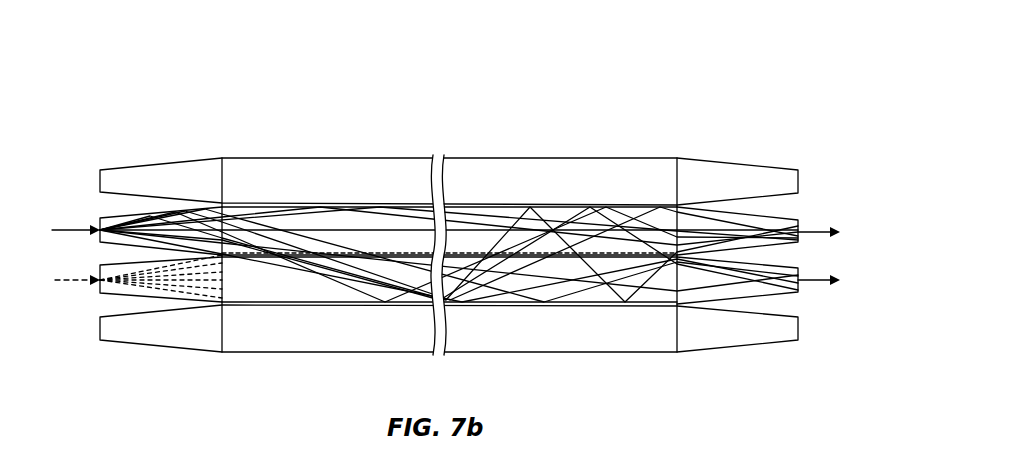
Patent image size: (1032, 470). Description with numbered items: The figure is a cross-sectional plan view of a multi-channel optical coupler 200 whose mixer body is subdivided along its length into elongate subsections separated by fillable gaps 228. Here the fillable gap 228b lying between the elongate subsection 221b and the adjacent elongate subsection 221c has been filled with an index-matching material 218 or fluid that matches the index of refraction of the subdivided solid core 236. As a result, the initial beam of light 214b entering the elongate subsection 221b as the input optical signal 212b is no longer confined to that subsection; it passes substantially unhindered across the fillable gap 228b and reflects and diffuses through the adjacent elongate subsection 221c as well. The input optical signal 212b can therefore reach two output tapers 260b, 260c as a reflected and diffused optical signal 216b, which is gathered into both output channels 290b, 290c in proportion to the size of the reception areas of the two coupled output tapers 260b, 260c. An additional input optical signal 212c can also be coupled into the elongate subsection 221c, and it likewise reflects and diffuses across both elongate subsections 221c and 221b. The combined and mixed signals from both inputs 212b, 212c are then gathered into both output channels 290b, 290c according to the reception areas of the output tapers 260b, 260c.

The multi-channel optical coupler 200 is at (250, 114).
The input optical signal 212b is at (98, 230).
The additional input optical signal 212c is at (98, 285).
The fillable gap 228 is at (353, 205).
The fillable gap 228b is at (352, 258).
The elongate subsection 221b is at (567, 205).
The elongate subsection 221c is at (640, 304).
The initial beam of light 214b is at (327, 272).
The index-matching material 218 is at (480, 296).
The reflected and diffused optical signal 216b is at (607, 293).
The solid core 236 is at (614, 225).
The output taper 260b is at (797, 228).
The output taper 260c is at (790, 295).
The output channel 290b is at (808, 230).
The output channel 290c is at (812, 283).